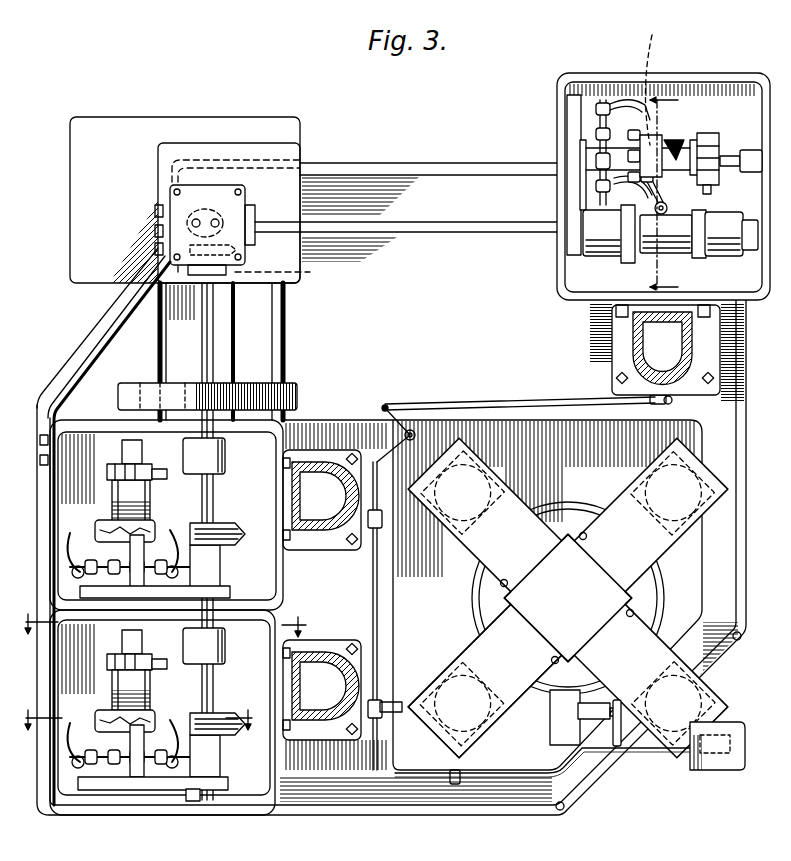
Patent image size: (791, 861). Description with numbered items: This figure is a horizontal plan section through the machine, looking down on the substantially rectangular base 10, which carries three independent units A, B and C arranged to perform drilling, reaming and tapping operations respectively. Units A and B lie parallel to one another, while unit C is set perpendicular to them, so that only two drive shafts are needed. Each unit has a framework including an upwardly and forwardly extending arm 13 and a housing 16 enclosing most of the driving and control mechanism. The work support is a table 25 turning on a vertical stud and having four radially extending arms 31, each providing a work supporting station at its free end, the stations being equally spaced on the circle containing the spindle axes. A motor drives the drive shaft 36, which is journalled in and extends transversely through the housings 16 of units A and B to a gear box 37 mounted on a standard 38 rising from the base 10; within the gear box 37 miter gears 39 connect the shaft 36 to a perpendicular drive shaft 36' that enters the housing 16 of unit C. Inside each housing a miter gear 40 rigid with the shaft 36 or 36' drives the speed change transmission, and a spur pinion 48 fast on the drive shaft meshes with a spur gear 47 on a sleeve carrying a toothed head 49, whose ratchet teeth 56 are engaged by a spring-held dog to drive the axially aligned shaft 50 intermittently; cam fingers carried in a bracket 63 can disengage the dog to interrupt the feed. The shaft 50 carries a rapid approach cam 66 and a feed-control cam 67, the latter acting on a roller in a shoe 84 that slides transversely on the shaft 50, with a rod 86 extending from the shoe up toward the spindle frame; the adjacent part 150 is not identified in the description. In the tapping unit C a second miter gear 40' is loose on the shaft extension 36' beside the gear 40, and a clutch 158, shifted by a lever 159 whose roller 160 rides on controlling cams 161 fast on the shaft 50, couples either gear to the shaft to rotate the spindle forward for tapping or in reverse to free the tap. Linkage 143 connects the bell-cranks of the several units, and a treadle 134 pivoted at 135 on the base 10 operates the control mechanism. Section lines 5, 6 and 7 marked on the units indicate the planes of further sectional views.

The base 10 is at (503, 808).
The arm 13 is at (636, 348).
The housing 16 is at (50, 493).
The table 25 is at (545, 595).
The radially extending arm 31 is at (462, 660).
The drive shaft 36 is at (233, 537).
The drive shaft 36' is at (427, 212).
The gear box 37 is at (212, 230).
The standard 38 is at (227, 281).
The miter gears 39 is at (298, 274).
The miter gear 40 is at (406, 472).
The miter gear 40' is at (725, 249).
The spur gear 47 is at (150, 790).
The spur pinion 48 is at (194, 801).
The toothed head 49 is at (146, 712).
The shaft 50 is at (128, 655).
The ratchet teeth 56 is at (120, 712).
The bracket 63 is at (72, 757).
The cam 66 is at (200, 655).
The cam 67 is at (108, 668).
The shoe 84 is at (718, 135).
The rod 86 is at (163, 478).
The treadle 134 is at (647, 752).
The treadle pivot 135 is at (455, 784).
The linkage 143 is at (380, 575).
The knob 150 is at (722, 160).
The clutch 158 is at (645, 258).
The lever 159 is at (670, 212).
The roller 160 is at (656, 77).
The controlling cams 161 is at (668, 140).
The section line 5 is at (163, 625).
The section line 6 is at (137, 719).
The section line 7 is at (670, 194).
The unit A is at (52, 682).
The unit B is at (52, 536).
The unit C is at (688, 57).